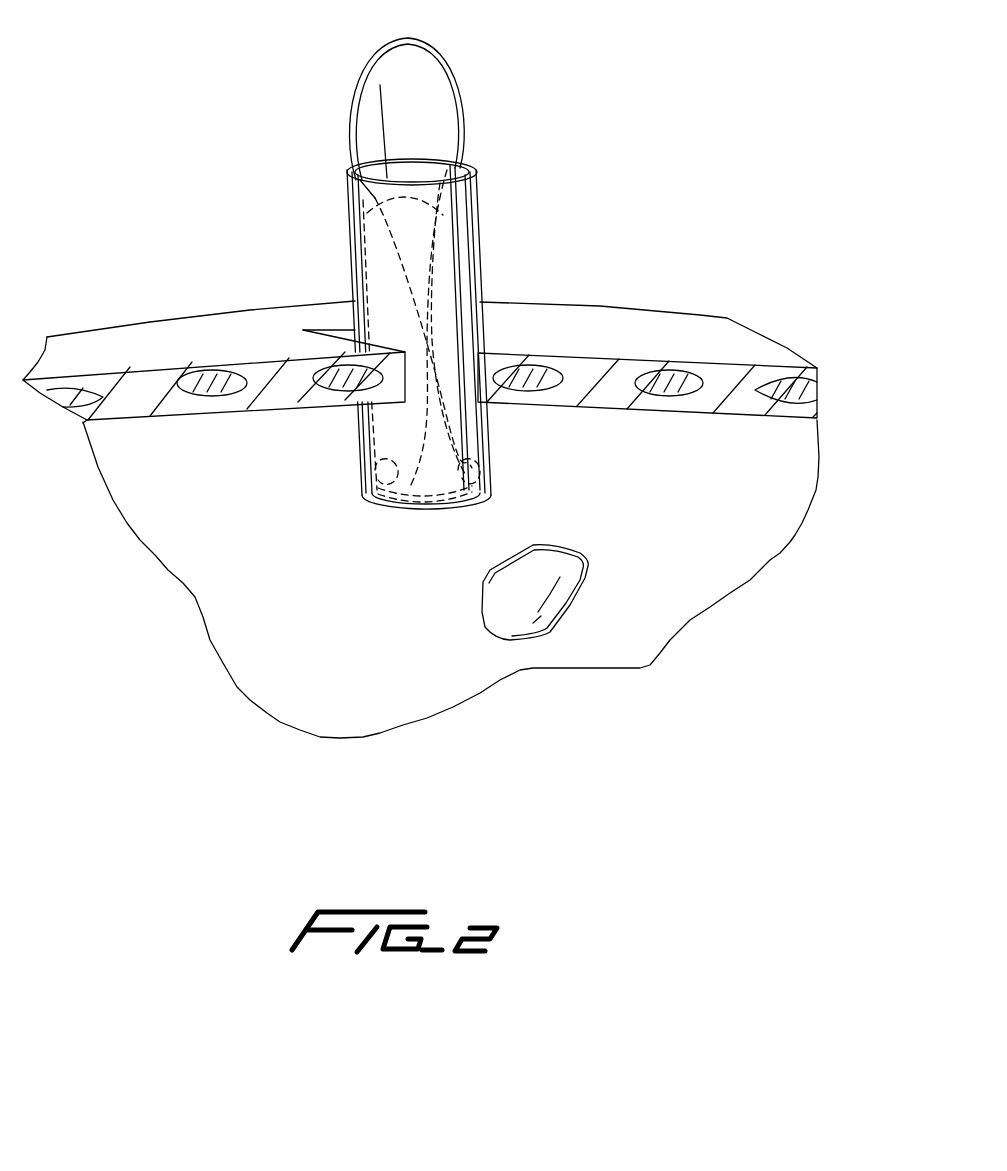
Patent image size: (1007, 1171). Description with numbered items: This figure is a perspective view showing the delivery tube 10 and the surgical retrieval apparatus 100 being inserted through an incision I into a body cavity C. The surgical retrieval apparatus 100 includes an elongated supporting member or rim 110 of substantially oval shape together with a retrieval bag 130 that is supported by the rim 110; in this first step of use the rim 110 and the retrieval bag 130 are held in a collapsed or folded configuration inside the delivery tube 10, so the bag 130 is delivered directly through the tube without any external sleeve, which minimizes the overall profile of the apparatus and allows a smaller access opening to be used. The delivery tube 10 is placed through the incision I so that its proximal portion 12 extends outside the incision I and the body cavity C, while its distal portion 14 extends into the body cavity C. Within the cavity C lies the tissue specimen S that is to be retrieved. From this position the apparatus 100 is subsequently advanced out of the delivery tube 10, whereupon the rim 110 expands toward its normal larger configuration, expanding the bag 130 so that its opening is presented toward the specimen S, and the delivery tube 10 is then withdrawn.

The surgical retrieval apparatus 100 is at (427, 265).
The rim 110 is at (433, 55).
The retrieval bag 130 is at (402, 148).
The proximal portion 12 is at (468, 327).
The delivery tube 10 is at (468, 257).
The distal portion 14 is at (512, 462).
The incision I is at (355, 330).
The body cavity C is at (290, 499).
The tissue specimen S is at (517, 615).